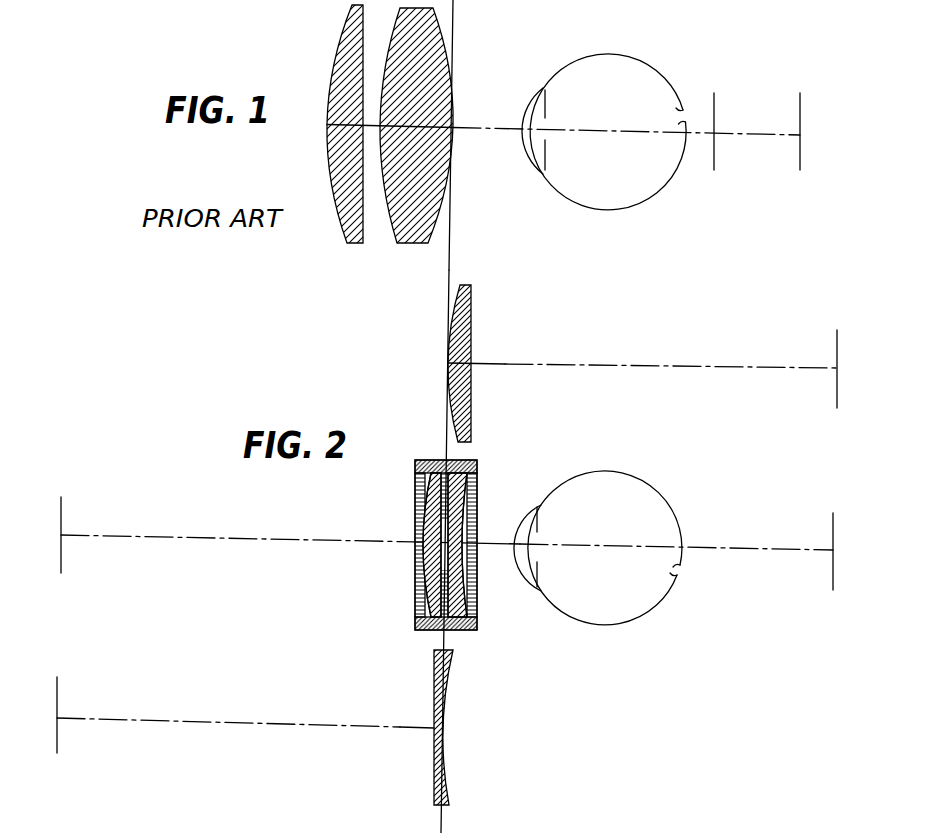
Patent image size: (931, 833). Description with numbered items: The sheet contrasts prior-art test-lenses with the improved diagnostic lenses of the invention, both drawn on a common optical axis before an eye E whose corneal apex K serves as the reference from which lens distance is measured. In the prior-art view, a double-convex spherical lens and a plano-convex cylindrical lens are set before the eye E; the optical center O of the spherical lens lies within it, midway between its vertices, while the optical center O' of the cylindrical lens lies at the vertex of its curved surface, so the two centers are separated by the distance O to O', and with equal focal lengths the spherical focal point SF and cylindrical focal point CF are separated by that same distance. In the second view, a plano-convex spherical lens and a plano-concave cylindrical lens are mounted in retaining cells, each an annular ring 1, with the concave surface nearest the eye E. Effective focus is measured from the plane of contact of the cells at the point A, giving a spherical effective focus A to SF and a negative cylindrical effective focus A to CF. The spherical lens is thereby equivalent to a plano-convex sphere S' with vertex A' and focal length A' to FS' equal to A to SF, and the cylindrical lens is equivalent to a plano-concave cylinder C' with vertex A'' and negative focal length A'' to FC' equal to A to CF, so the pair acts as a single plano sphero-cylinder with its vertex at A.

In FIG. 1, the optical center of spherical lens O is at (447, 109).
In FIG. 1, the optical center of cylindrical lens O' is at (316, 107).
In FIG. 1, the eye E is at (604, 132).
In FIG. 2, the eye E is at (598, 548).
In FIG. 1, the corneal apex K is at (522, 131).
In FIG. 2, the corneal apex K is at (514, 553).
In FIG. 1, the cylindrical focal point CF is at (709, 143).
In FIG. 2, the cylindrical focal point CF is at (58, 546).
In FIG. 1, the spherical focal point SF is at (795, 143).
In FIG. 2, the spherical focal point SF is at (829, 562).
In FIG. 2, the equivalent plano-convex sphere S' is at (476, 363).
In FIG. 2, the vertex of equivalent plano-convex sphere A' is at (439, 349).
In FIG. 2, the vertex point on plane P—P A is at (474, 532).
In FIG. 2, the vertex of equivalent plano-concave cylinder A'' is at (460, 715).
In FIG. 2, the equivalent plano-concave cylinder C' is at (428, 726).
In FIG. 2, the focal point of equivalent sphere FS' is at (833, 381).
In FIG. 2, the focal point of equivalent cylinder FC' is at (55, 728).
In FIG. 2, the annular ring 1 is at (415, 619).